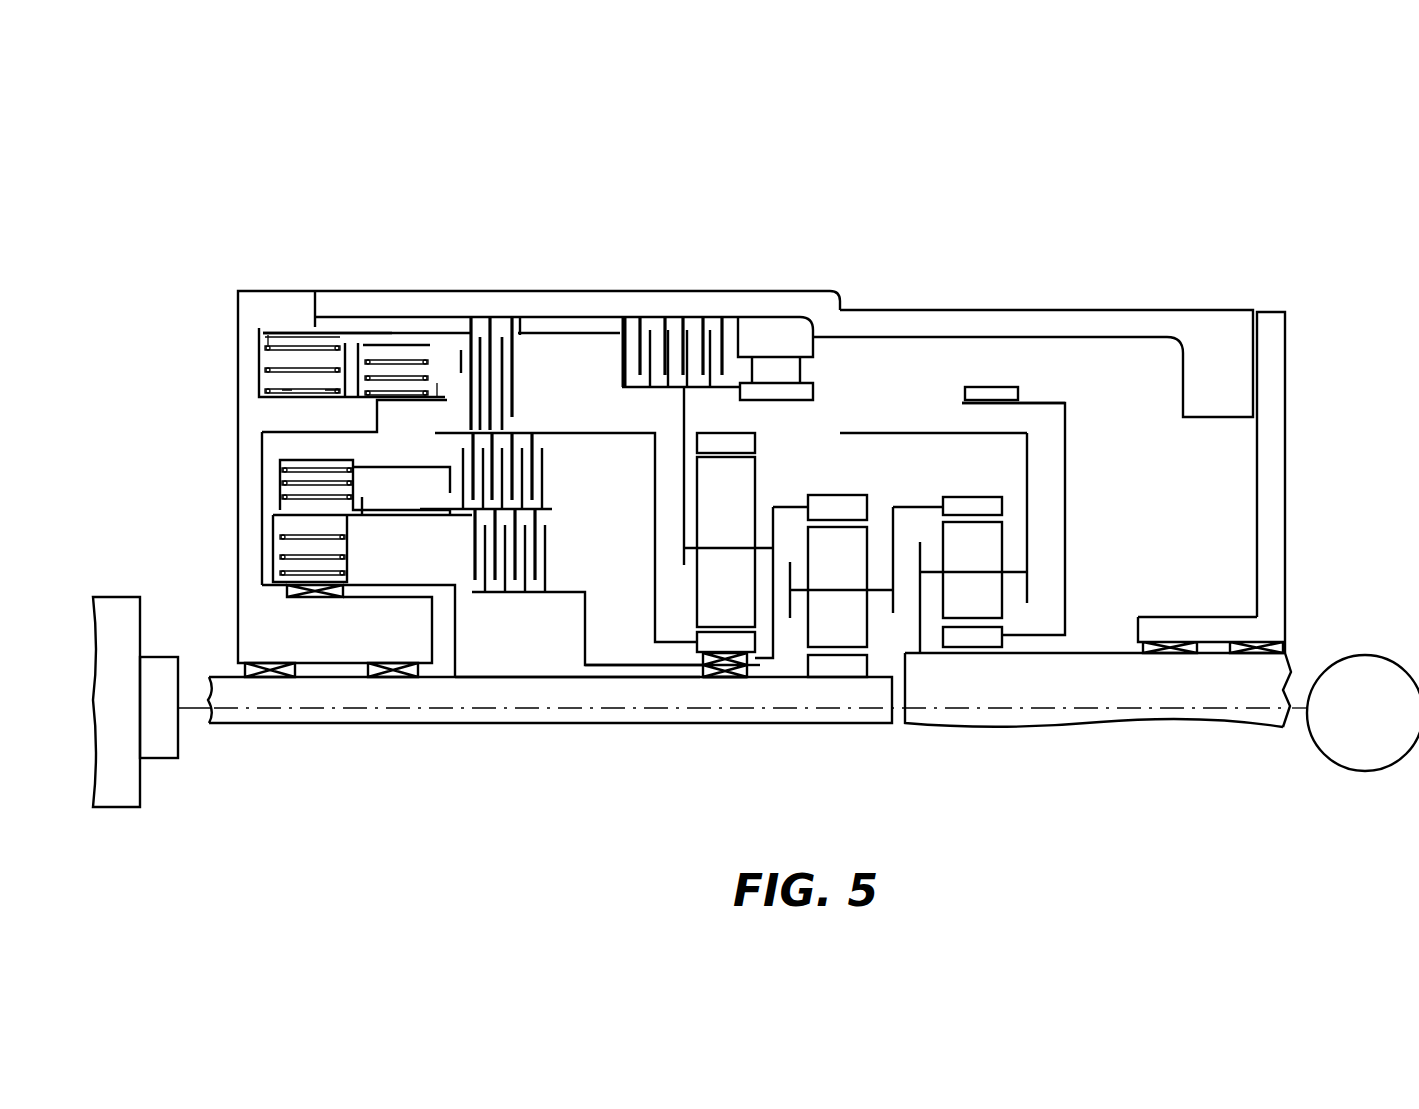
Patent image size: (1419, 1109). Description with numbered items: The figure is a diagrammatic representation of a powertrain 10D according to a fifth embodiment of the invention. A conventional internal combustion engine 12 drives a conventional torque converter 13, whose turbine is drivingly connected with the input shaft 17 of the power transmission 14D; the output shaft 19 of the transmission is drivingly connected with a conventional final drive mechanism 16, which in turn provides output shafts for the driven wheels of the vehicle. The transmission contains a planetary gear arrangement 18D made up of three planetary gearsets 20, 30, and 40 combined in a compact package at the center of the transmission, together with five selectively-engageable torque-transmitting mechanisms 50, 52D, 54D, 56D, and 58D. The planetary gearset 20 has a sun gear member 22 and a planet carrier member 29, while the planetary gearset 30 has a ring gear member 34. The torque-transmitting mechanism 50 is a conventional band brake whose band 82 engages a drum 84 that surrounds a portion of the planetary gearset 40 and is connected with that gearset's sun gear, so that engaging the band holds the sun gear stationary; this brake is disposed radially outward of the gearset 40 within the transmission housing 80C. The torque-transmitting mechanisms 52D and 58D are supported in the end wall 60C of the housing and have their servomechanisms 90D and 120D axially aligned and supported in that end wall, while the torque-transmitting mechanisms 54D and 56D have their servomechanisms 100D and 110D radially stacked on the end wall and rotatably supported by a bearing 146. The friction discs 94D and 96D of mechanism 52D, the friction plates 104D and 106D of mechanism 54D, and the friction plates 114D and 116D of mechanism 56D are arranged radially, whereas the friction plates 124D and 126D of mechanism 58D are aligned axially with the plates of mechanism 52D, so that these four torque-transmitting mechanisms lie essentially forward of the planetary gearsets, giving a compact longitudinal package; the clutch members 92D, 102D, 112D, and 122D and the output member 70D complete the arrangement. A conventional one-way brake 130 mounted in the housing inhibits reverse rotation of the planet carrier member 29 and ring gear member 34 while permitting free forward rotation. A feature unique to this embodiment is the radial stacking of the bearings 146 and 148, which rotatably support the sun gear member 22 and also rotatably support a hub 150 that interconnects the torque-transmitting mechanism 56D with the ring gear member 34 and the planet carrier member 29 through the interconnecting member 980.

The powertrain 10D is at (268, 200).
The internal combustion engine 12 is at (129, 584).
The torque converter 13 is at (189, 645).
The power transmission 14D is at (546, 250).
The final drive mechanism 16 is at (1408, 647).
The input shaft 17 is at (240, 720).
The gear member 18D is at (626, 700).
The output shaft 19 is at (1140, 697).
The planetary gearset 20 is at (728, 700).
The sun gear member 22 is at (760, 660).
The planet carrier member 29 is at (758, 545).
The planetary gearset 30 is at (840, 700).
The ring gear member 34 is at (838, 503).
The planetary gearset 40 is at (948, 686).
The torque-transmitting mechanism 50 is at (990, 378).
The torque-transmitting mechanism 52D is at (462, 405).
The torque-transmitting mechanism 54D is at (244, 476).
The torque-transmitting mechanism 56D is at (444, 548).
The torque-transmitting mechanism 58D is at (364, 333).
The transmission housing 60C is at (228, 317).
The output member 70D is at (1300, 441).
The housing portion 80C is at (895, 302).
The band 82 is at (1000, 386).
The drum 84 is at (1067, 478).
The servomechanism 90D is at (361, 405).
The clutch 92D is at (447, 333).
The friction discs 94D is at (514, 360).
The friction discs 96D is at (514, 393).
The interconnecting member 980 is at (655, 455).
The servomechanism 100D is at (268, 490).
The interconnecting member 102D is at (403, 465).
The friction plates 104D is at (535, 437).
The friction plates 106D is at (543, 487).
The servomechanism 110D is at (301, 632).
The sun gear 112D is at (362, 522).
The friction plates 114D is at (452, 540).
The friction plates 116D is at (545, 585).
The servomechanism 120D is at (290, 302).
The planet carrier 122D is at (392, 330).
The friction plates 124D is at (620, 336).
The friction plates 126D is at (645, 337).
The one-way brake 130 is at (796, 314).
The bearing 146 is at (702, 675).
The bearing 148 is at (695, 665).
The hub 150 is at (606, 664).